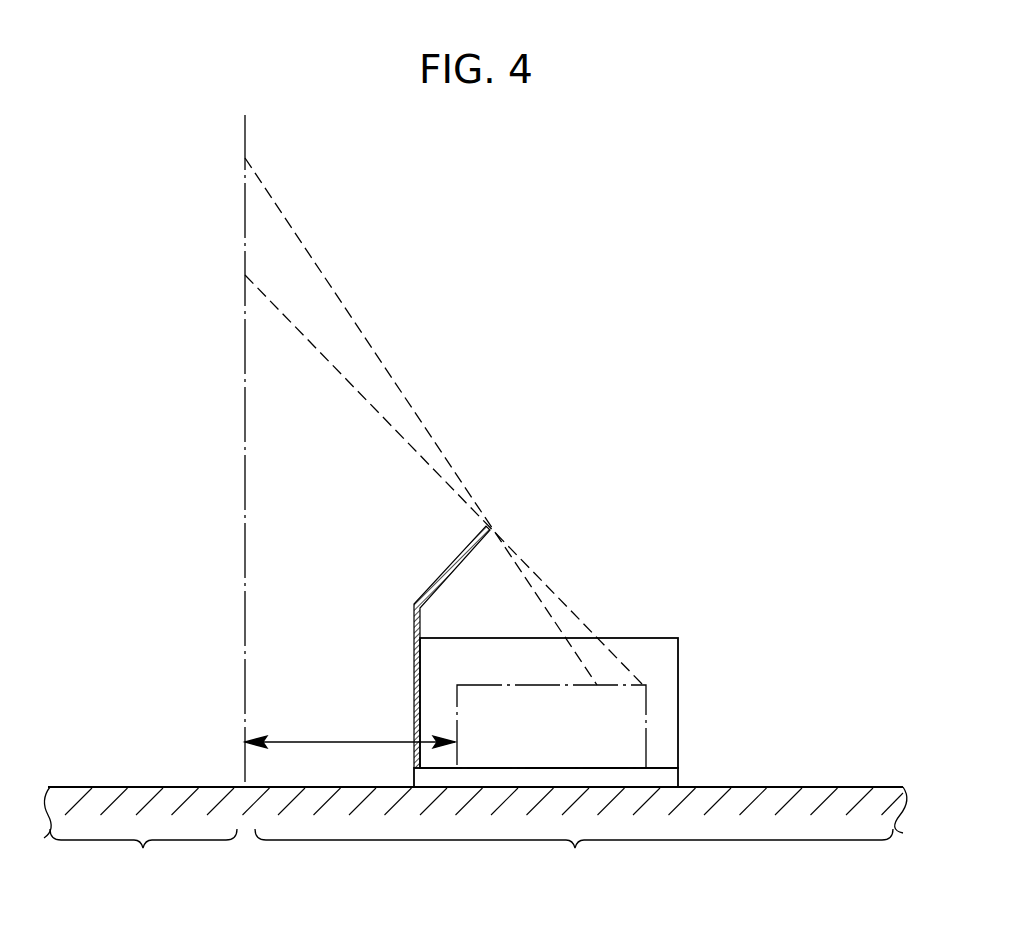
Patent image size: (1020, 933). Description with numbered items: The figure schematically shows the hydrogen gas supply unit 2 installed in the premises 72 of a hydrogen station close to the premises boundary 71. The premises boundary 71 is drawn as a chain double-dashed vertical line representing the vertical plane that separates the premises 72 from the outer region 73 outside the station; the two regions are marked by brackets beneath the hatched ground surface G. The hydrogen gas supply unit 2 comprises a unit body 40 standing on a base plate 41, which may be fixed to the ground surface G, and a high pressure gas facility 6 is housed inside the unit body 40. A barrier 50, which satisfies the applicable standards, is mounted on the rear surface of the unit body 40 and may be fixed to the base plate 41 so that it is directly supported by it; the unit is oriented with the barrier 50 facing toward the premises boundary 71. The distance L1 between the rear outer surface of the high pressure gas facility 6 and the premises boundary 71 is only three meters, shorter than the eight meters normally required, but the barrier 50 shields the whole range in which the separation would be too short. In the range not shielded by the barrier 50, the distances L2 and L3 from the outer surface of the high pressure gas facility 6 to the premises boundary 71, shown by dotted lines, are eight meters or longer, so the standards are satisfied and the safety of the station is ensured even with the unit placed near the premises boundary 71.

The hydrogen gas supply unit 2 is at (553, 656).
The high pressure gas facility 6 is at (646, 712).
The unit body 40 is at (678, 647).
The base plate 41 is at (663, 781).
The barrier 50 is at (414, 632).
The premises boundary 71 is at (246, 790).
The premises 72 is at (574, 854).
The outer region 73 is at (143, 854).
The ground surface G is at (838, 787).
The distance L1 is at (350, 730).
The distance L2 is at (322, 272).
The distance L3 is at (320, 350).